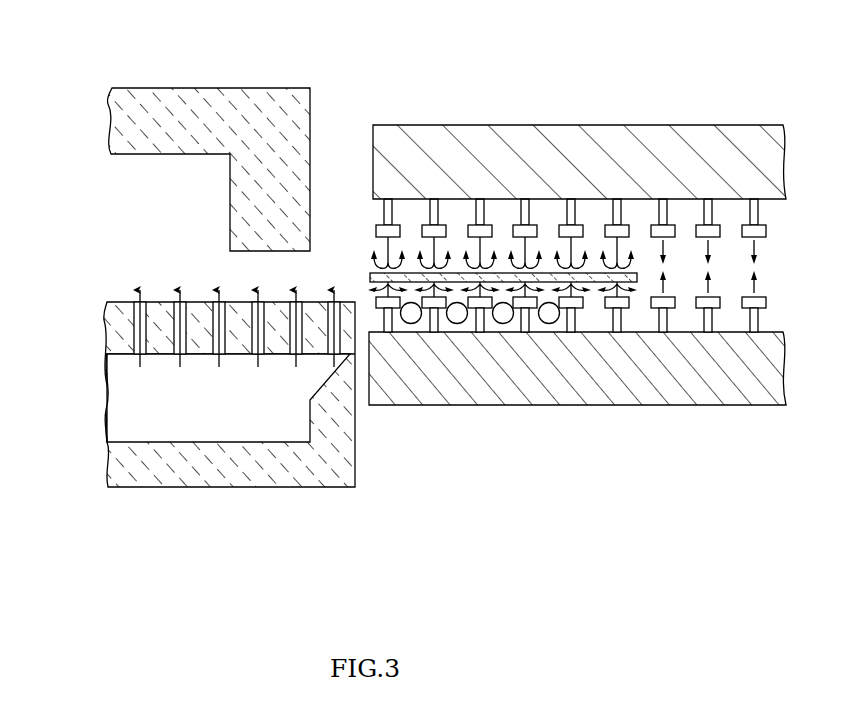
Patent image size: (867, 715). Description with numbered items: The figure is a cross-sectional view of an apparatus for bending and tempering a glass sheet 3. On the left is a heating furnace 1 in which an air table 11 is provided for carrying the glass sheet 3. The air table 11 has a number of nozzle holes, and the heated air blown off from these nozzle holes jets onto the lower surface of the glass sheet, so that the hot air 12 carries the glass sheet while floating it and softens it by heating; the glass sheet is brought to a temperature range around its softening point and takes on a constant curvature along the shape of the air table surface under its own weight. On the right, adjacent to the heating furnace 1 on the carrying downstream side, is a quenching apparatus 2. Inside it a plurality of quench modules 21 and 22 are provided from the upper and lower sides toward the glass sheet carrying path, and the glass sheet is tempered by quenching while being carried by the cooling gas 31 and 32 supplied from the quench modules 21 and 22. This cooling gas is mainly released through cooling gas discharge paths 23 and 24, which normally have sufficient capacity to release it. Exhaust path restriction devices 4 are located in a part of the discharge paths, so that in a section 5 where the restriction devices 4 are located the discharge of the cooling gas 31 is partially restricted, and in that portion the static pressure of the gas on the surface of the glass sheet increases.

The heating furnace 1 is at (176, 82).
The quenching apparatus 2 is at (578, 161).
The glass sheet 3 is at (368, 273).
The exhaust path restriction device 4 is at (583, 382).
The section 5 is at (501, 381).
The air table 11 is at (196, 420).
The hot air 12 is at (258, 357).
The quench module 21 is at (668, 213).
The quench module 22 is at (667, 317).
The cooling gas discharge path 23 is at (577, 381).
The cooling gas discharge path 24 is at (731, 213).
The cooling gas 31 is at (762, 290).
The cooling gas 32 is at (762, 243).